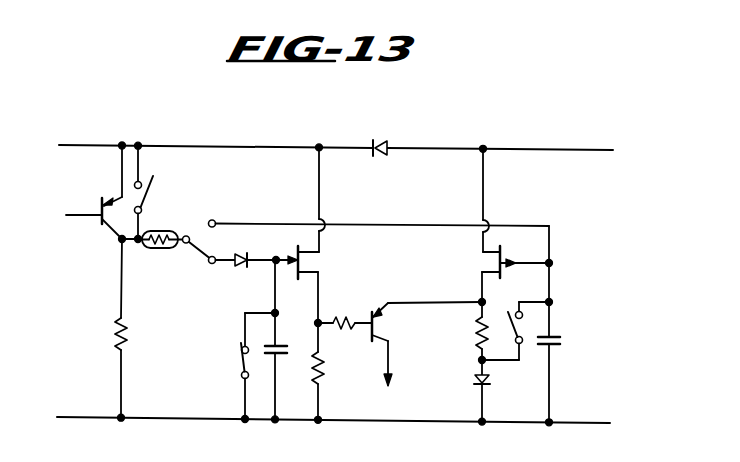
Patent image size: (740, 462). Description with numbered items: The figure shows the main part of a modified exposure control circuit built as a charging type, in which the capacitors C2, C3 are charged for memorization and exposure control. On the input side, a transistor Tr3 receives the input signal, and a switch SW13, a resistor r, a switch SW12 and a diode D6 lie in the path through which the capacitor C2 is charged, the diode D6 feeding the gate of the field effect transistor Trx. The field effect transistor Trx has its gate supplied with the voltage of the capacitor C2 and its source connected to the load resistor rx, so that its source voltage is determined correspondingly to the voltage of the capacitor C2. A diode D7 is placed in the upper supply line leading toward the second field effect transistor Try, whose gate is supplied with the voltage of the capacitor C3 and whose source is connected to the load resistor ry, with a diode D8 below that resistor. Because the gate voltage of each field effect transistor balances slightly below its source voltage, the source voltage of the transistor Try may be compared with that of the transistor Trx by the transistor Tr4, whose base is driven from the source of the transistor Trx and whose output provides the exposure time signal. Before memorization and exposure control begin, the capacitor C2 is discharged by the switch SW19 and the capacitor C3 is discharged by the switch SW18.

The transistor Tr3 is at (81, 283).
The switch SW13 is at (166, 194).
The resistor r is at (162, 224).
The switch SW12 is at (361, 249).
The diode D6 is at (248, 277).
The field effect transistor Trx is at (312, 237).
The load resistor rx is at (329, 373).
The capacitor C2 is at (283, 341).
The switch SW19 is at (234, 368).
The transistor Tr4 is at (399, 344).
The diode D7 is at (389, 165).
The field effect transistor Try is at (502, 227).
The load resistor ry is at (469, 333).
The diode D8 is at (497, 392).
The switch SW18 is at (528, 311).
The capacitor C3 is at (563, 364).